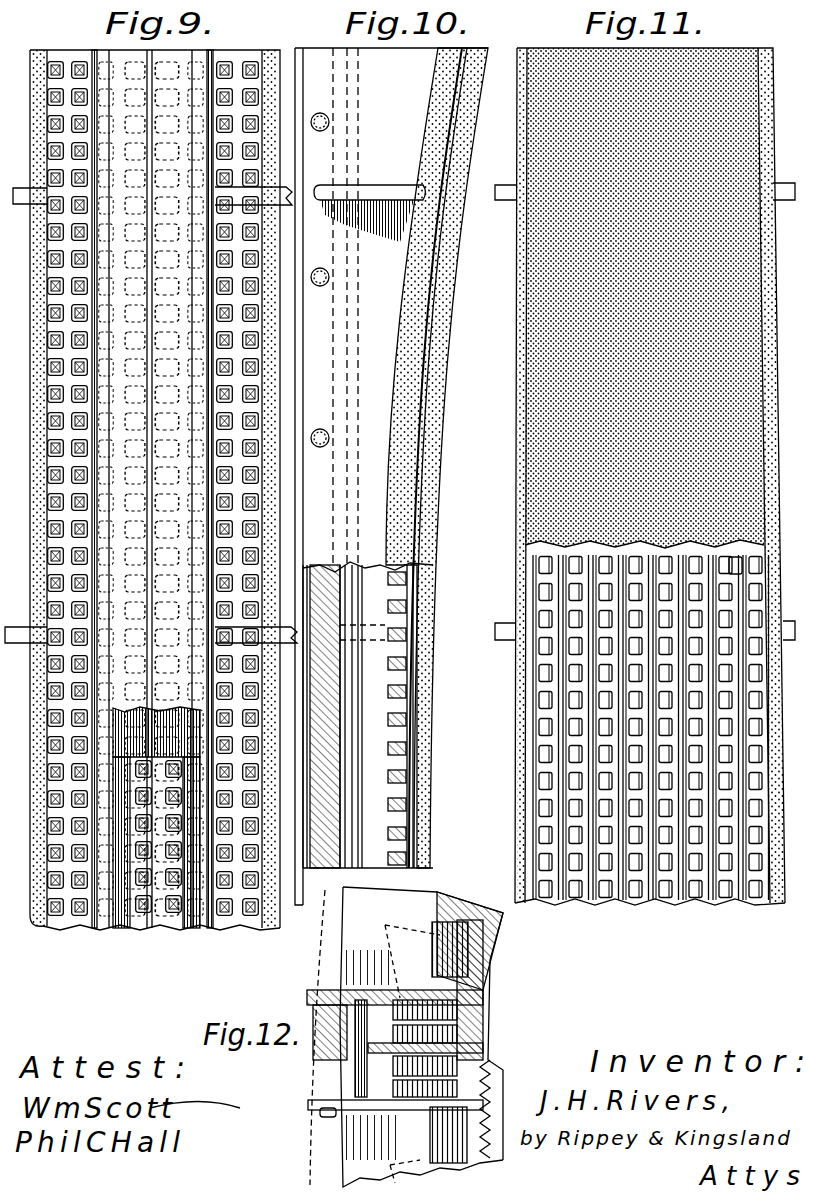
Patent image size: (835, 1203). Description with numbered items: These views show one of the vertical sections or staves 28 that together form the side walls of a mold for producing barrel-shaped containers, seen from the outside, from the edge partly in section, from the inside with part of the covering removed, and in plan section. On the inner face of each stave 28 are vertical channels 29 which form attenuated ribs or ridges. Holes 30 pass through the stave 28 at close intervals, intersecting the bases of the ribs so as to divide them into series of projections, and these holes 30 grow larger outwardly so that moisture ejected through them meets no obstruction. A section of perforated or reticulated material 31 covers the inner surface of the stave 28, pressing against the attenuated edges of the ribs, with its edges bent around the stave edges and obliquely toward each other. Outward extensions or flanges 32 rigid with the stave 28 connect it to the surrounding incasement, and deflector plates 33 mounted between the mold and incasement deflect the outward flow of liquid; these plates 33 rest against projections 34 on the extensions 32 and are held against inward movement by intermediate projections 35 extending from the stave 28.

In FIG. 9, the staves 28 is at (151, 475).
In FIG. 10, the staves 28 is at (391, 464).
In FIG. 11, the staves 28 is at (645, 463).
In FIG. 12, the staves 28 is at (487, 950).
In FIG. 10, the vertical channels 29 is at (425, 787).
In FIG. 11, the vertical channels 29 is at (645, 905).
In FIG. 12, the vertical channels 29 is at (483, 990).
In FIG. 9, the holes 30 is at (142, 920).
In FIG. 10, the holes 30 is at (408, 740).
In FIG. 11, the holes 30 is at (730, 898).
In FIG. 12, the holes 30 is at (475, 1040).
In FIG. 9, the reticulated material 31 is at (25, 925).
In FIG. 10, the reticulated material 31 is at (545, 353).
In FIG. 11, the reticulated material 31 is at (545, 353).
In FIG. 12, the reticulated material 31 is at (490, 1085).
In FIG. 9, the outward extensions 32 is at (192, 925).
In FIG. 10, the outward extensions 32 is at (305, 875).
In FIG. 12, the outward extensions 32 is at (322, 1160).
In FIG. 10, the deflector plates 33 is at (362, 703).
In FIG. 12, the deflector plates 33 is at (345, 1067).
In FIG. 9, the projections 34 is at (124, 925).
In FIG. 12, the projections 34 is at (337, 1160).
In FIG. 9, the intermediate projections 35 is at (180, 690).
In FIG. 12, the intermediate projections 35 is at (470, 1015).